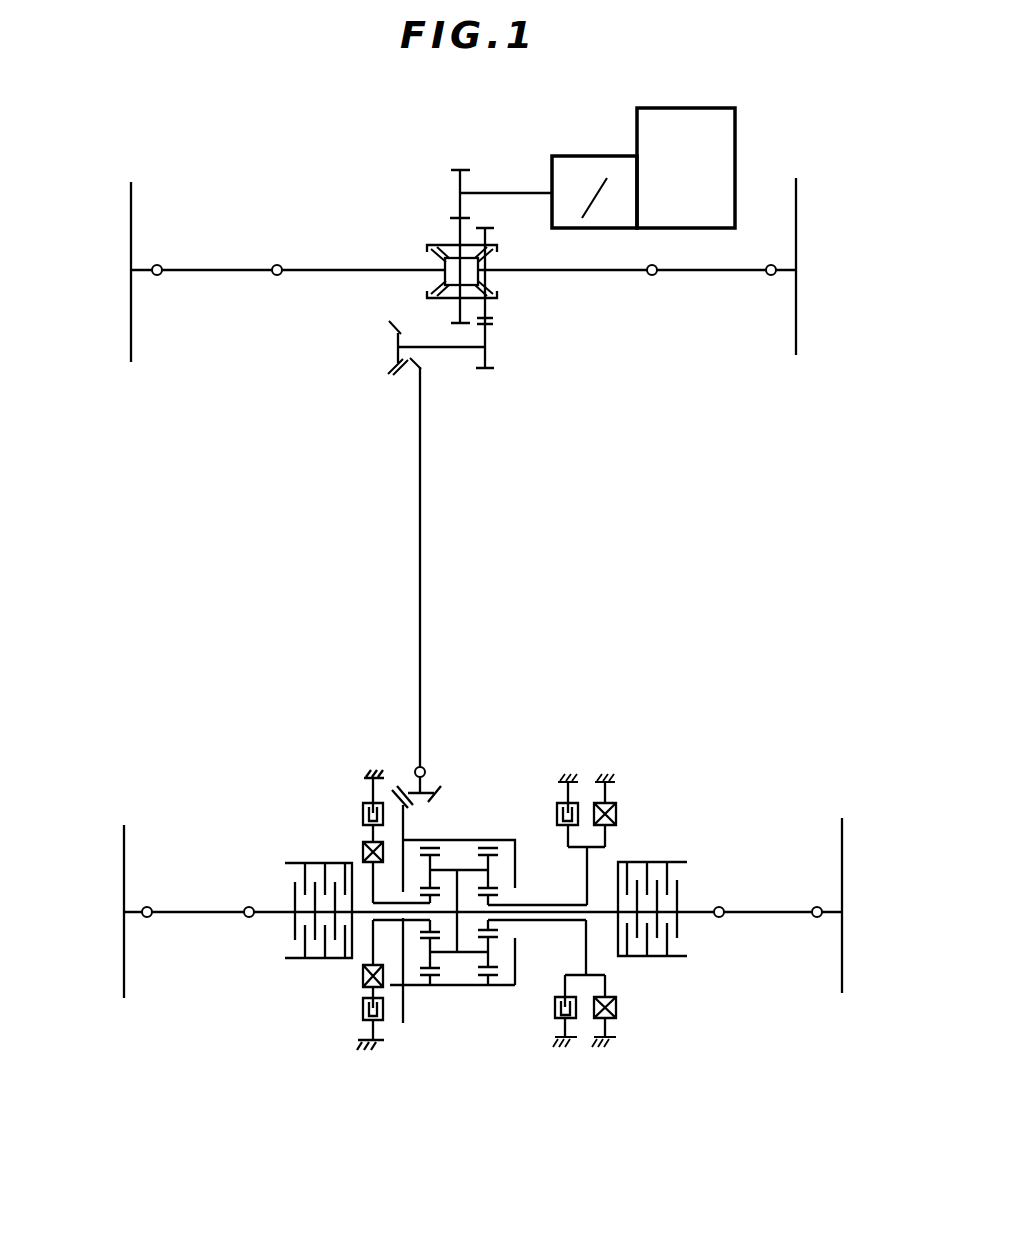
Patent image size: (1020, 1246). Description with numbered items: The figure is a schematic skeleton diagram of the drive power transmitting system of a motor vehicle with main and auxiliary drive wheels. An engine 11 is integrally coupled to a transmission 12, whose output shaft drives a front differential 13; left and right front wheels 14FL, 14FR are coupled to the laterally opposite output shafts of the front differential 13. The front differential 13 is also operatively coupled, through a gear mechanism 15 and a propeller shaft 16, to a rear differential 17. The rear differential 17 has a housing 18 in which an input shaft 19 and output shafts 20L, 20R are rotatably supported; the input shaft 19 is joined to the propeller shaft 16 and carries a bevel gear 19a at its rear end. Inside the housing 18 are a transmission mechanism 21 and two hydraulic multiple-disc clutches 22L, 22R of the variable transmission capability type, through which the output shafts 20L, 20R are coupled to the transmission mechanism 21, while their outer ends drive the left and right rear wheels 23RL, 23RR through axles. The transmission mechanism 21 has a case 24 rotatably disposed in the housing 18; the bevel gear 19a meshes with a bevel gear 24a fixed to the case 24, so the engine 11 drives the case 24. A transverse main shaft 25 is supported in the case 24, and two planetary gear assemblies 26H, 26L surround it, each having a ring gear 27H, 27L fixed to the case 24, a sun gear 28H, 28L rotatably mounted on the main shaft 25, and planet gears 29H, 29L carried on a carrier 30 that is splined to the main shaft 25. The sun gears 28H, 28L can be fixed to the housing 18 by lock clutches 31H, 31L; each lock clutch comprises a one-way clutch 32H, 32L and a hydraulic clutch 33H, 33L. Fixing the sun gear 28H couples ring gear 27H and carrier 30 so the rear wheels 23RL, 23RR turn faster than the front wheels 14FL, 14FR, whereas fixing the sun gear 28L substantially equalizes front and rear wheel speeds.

The engine 11 is at (683, 108).
The transmission 12 is at (589, 157).
The front differential 13 is at (410, 225).
The left front wheel 14FL is at (131, 225).
The right front wheel 14FR is at (796, 230).
The gear mechanism 15 is at (499, 346).
The propeller shaft 16 is at (423, 548).
The rear differential 17 is at (575, 742).
The housing 18 is at (374, 768).
The input shaft 19 is at (426, 785).
The bevel gear 19a is at (435, 800).
The left output shaft 20L is at (267, 914).
The right output shaft 20R is at (698, 914).
The transmission mechanism 21 is at (497, 835).
The left hydraulic multiple-disc clutch 22L is at (272, 893).
The right hydraulic multiple-disc clutch 22R is at (678, 850).
The left rear wheel 23RL is at (124, 970).
The right rear wheel 23RR is at (842, 968).
The case 24 is at (513, 988).
The bevel gear 24a is at (398, 1030).
The main shaft 25 is at (443, 987).
The high-speed planetary gear assembly 26H is at (447, 836).
The low-speed planetary gear assembly 26L is at (515, 866).
The ring gear 27H is at (425, 987).
The ring gear 27L is at (490, 988).
The sun gear 28H is at (423, 928).
The sun gear 28L is at (497, 906).
The planet gears 29H is at (420, 973).
The planet gears 29L is at (498, 975).
The carrier 30 is at (458, 986).
The lock clutch 31H is at (335, 818).
The lock clutch 31L is at (620, 1044).
The one-way clutch 32H is at (362, 850).
The one-way clutch 32L is at (616, 1009).
The hydraulic clutch 33H is at (362, 811).
The hydraulic clutch 33L is at (552, 1006).